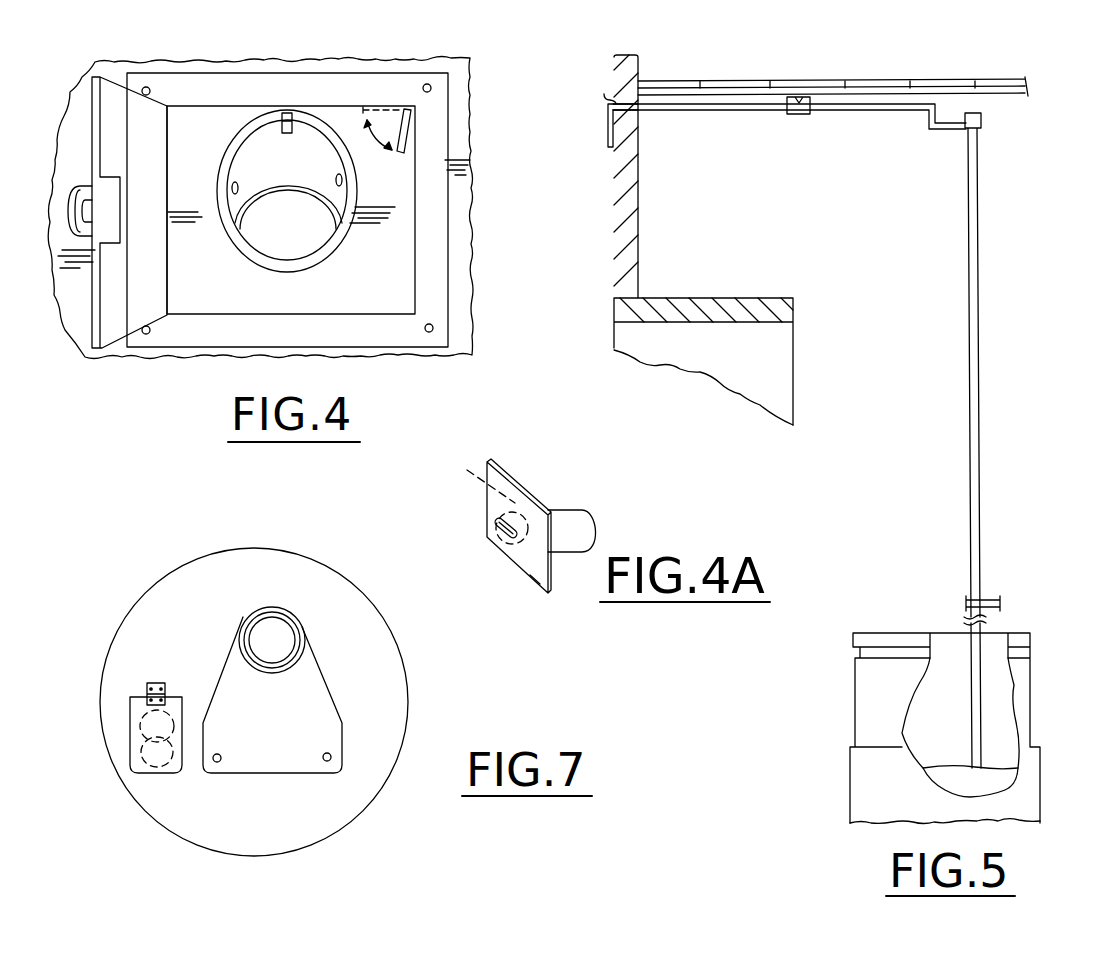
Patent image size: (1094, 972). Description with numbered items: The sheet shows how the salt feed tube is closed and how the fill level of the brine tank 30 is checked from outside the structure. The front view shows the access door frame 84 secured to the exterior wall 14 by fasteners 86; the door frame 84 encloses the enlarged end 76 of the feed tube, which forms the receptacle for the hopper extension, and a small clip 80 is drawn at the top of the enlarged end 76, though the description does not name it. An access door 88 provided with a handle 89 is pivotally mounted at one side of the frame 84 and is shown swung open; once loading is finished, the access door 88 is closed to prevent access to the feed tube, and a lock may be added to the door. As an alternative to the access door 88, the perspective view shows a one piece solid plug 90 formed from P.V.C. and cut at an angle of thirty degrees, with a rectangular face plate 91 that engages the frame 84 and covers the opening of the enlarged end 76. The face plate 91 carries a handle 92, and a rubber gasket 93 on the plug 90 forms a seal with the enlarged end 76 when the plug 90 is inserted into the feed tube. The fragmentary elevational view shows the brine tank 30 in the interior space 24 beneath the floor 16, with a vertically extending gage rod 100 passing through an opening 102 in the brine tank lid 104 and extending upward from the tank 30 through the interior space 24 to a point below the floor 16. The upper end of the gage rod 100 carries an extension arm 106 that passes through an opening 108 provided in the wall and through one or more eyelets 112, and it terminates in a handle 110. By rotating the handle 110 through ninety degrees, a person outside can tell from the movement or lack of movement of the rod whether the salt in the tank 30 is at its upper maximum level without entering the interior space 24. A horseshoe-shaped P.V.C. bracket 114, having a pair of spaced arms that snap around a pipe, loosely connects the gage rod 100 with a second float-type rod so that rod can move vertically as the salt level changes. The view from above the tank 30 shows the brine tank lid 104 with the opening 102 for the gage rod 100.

In FIG. 4, the exterior wall 14 is at (470, 110).
In FIG. 5, the floor 16 is at (968, 79).
In FIG. 5, the interior space 24 is at (892, 382).
In FIG. 5, the brine tank 30 is at (1035, 752).
In FIG. 4, the enlarged end 76 is at (308, 265).
In FIG. 4, the retaining clip 80 is at (287, 112).
In FIG. 4, the access door frame 84 is at (436, 305).
In FIG. 4, the fasteners 86 is at (432, 88).
In FIG. 7, the fasteners 86 is at (296, 622).
In FIG. 4, the access door 88 is at (93, 103).
In FIG. 4, the handle 89 is at (94, 188).
In FIG. 4A, the plug 90 is at (568, 510).
In FIG. 4A, the face plate 91 is at (532, 573).
In FIG. 4A, the handle 92 is at (495, 522).
In FIG. 4A, the rubber gasket 93 is at (480, 493).
In FIG. 5, the gage rod 100 is at (981, 348).
In FIG. 7, the opening 102 is at (222, 761).
In FIG. 7, the brine tank lid 104 is at (315, 680).
In FIG. 5, the extension arm 106 is at (872, 111).
In FIG. 5, the opening 108 is at (604, 94).
In FIG. 4, the handle 110 is at (406, 137).
In FIG. 5, the handle 110 is at (607, 130).
In FIG. 5, the eyelets 112 is at (795, 116).
In FIG. 5, the bracket 114 is at (990, 600).